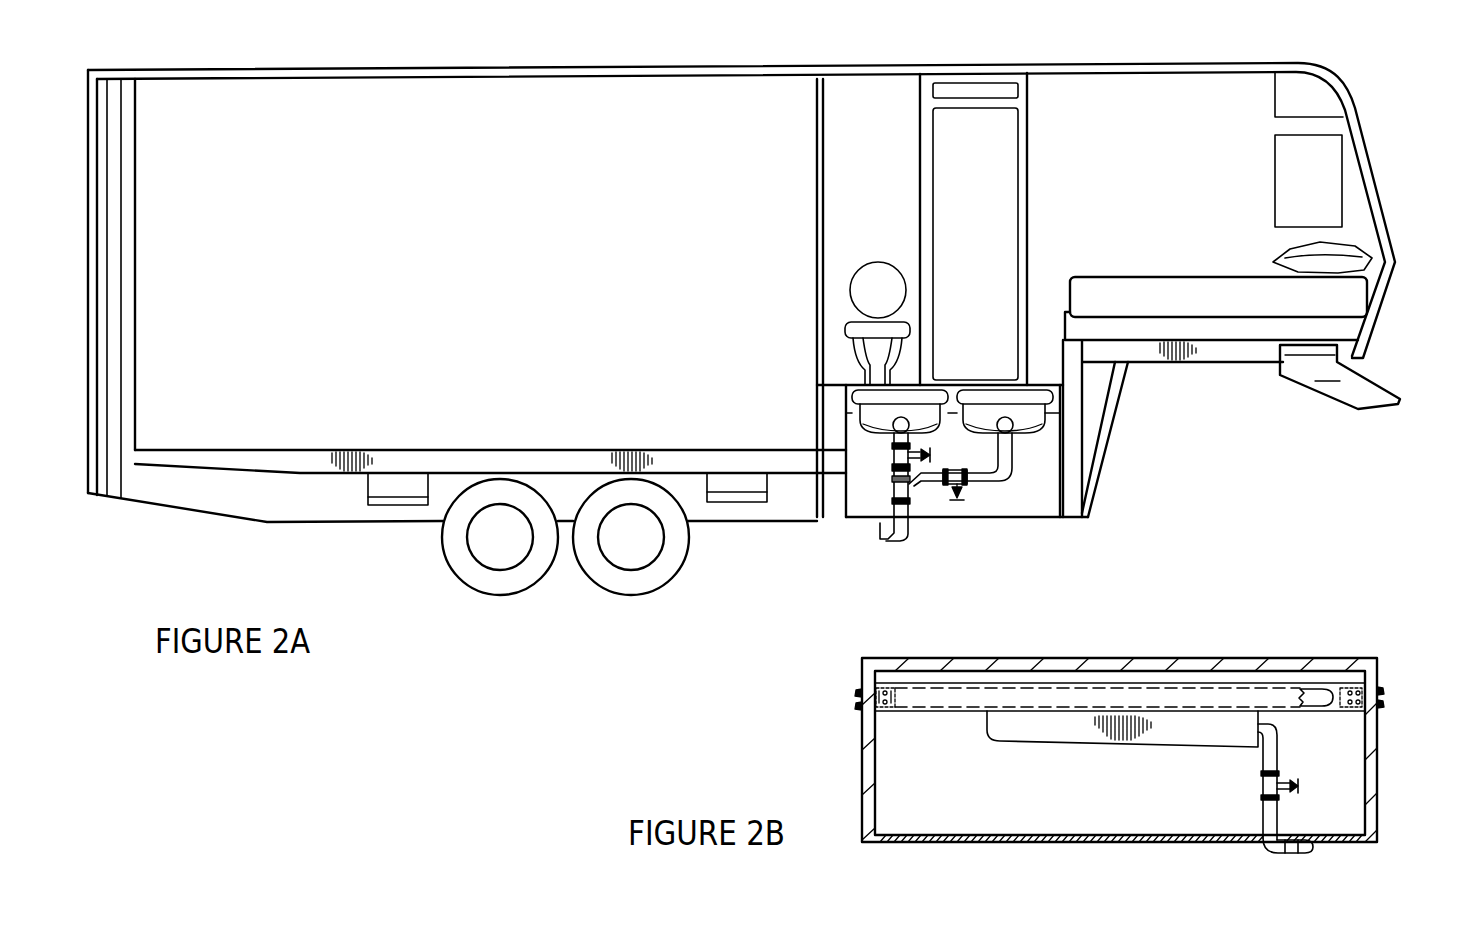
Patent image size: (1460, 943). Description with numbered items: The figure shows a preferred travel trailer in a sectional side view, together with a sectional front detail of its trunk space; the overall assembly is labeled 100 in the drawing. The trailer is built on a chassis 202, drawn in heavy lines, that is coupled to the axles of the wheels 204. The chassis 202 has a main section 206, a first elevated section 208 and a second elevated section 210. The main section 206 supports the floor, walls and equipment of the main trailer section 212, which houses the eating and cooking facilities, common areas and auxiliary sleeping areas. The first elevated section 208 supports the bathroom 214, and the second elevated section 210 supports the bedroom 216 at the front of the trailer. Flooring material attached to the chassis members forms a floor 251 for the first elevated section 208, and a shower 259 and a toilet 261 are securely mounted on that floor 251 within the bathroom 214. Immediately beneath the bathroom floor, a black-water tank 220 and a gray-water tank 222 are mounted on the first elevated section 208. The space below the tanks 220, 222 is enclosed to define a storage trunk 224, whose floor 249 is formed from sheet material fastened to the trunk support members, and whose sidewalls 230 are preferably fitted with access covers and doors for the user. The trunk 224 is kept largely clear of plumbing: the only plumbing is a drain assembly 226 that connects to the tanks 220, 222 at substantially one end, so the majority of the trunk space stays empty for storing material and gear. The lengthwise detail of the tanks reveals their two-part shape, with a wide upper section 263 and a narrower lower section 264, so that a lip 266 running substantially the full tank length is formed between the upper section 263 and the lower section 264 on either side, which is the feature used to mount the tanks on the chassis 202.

In FIG. 2A, the trailer 100 is at (660, 52).
In FIG. 2A, the chassis 202 is at (792, 462).
In FIG. 2A, the wheels 204 is at (507, 558).
In FIG. 2A, the main section 206 is at (583, 450).
In FIG. 2A, the first elevated section 208 is at (1058, 403).
In FIG. 2B, the first elevated section 208 is at (1356, 684).
In FIG. 2A, the second elevated section 210 is at (1220, 362).
In FIG. 2A, the main section of the trailer 212 is at (420, 338).
In FIG. 2A, the bathroom 214 is at (892, 177).
In FIG. 2A, the bedroom 216 is at (1177, 177).
In FIG. 2A, the black-water tank 220 is at (877, 431).
In FIG. 2A, the gray-water tank 222 is at (1037, 428).
In FIG. 2B, the gray-water tank 222 is at (1187, 700).
In FIG. 2A, the storage trunk 224 is at (1003, 498).
In FIG. 2A, the drain assembly 226 is at (907, 527).
In FIG. 2B, the drain assembly 226 is at (1283, 763).
In FIG. 2B, the sidewalls 230 is at (860, 730).
In FIG. 2B, the floor of the trunk 249 is at (960, 833).
In FIG. 2A, the floor 251 is at (843, 383).
In FIG. 2B, the floor 251 is at (960, 658).
In FIG. 2A, the shower 259 is at (1020, 75).
In FIG. 2A, the toilet 261 is at (897, 267).
In FIG. 2B, the upper section 263 is at (1042, 700).
In FIG. 2B, the lower section 264 is at (1170, 733).
In FIG. 2B, the lip 266 is at (972, 715).